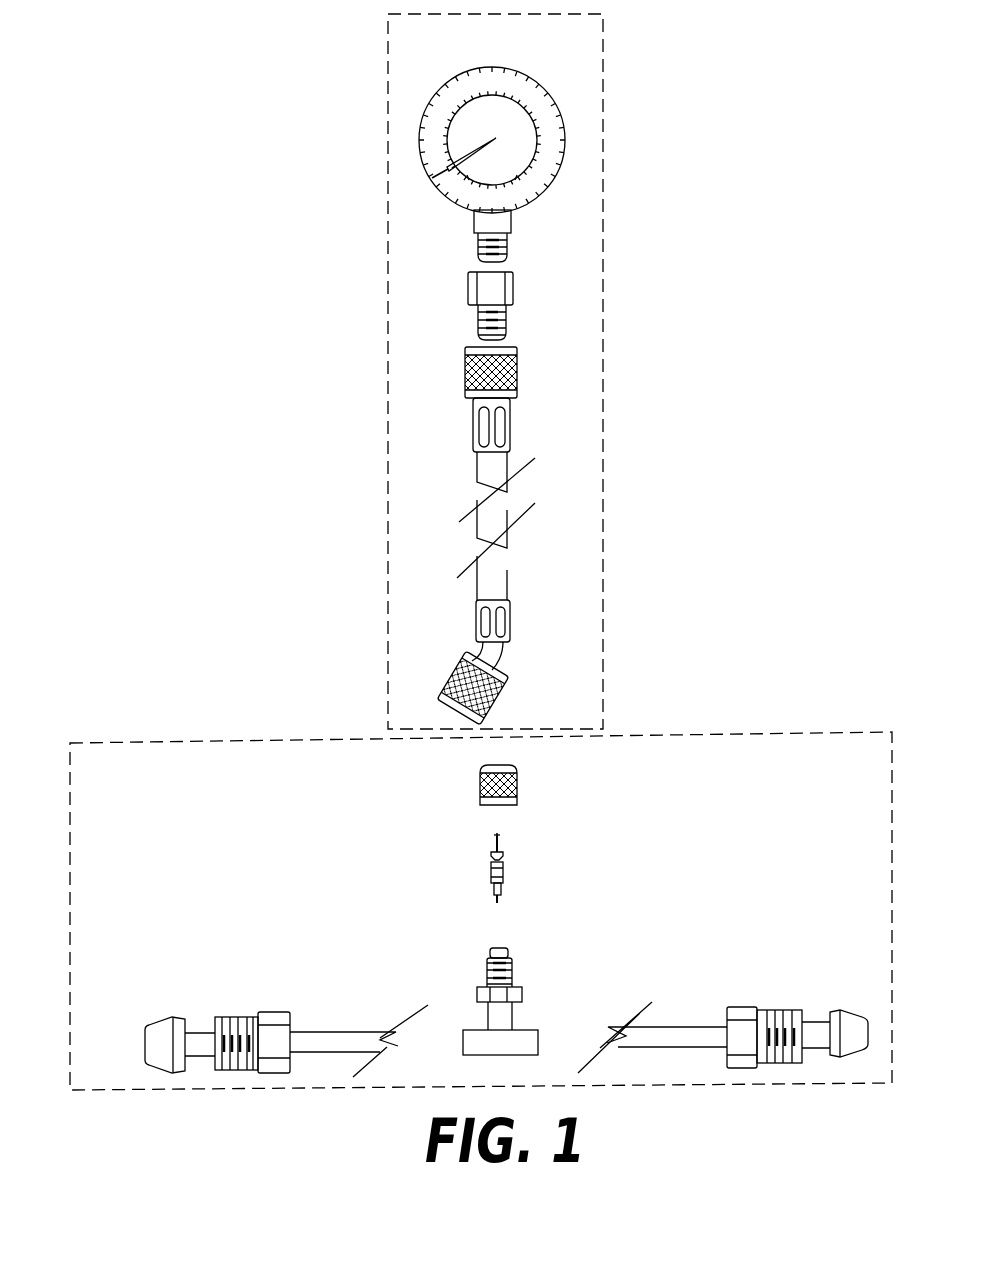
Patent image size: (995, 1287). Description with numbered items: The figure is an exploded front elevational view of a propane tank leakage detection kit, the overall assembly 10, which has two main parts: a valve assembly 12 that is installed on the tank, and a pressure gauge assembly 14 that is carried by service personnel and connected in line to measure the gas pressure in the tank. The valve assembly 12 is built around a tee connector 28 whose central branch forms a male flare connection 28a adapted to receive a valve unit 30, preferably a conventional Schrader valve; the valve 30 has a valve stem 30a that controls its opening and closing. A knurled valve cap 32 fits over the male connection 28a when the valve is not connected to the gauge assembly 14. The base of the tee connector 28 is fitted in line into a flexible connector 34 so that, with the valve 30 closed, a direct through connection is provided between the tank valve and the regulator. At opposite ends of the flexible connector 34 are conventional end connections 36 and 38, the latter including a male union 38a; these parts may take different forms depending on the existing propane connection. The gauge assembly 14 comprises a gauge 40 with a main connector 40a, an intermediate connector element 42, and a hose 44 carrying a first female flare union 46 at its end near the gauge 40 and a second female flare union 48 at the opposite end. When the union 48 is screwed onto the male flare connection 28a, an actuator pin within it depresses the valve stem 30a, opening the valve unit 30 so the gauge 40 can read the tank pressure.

The overall assembly 10 is at (653, 567).
The valve assembly 12 is at (679, 757).
The pressure gauge assembly 14 is at (586, 491).
The tee connector 28 is at (531, 1022).
The male flare connection 28a is at (508, 967).
The valve unit 30 is at (504, 870).
The valve stem 30a is at (500, 842).
The knurled valve cap 32 is at (480, 783).
The flexible connector 34 is at (241, 1009).
The end connection 36 is at (187, 1007).
The end connection 38 is at (770, 999).
The male union 38a is at (792, 1012).
The gauge 40 is at (517, 96).
The main connector 40a is at (511, 236).
The intermediate connector element 42 is at (512, 292).
The hose 44 is at (500, 460).
The first female flare union 46 is at (517, 370).
The second female flare union 48 is at (505, 697).